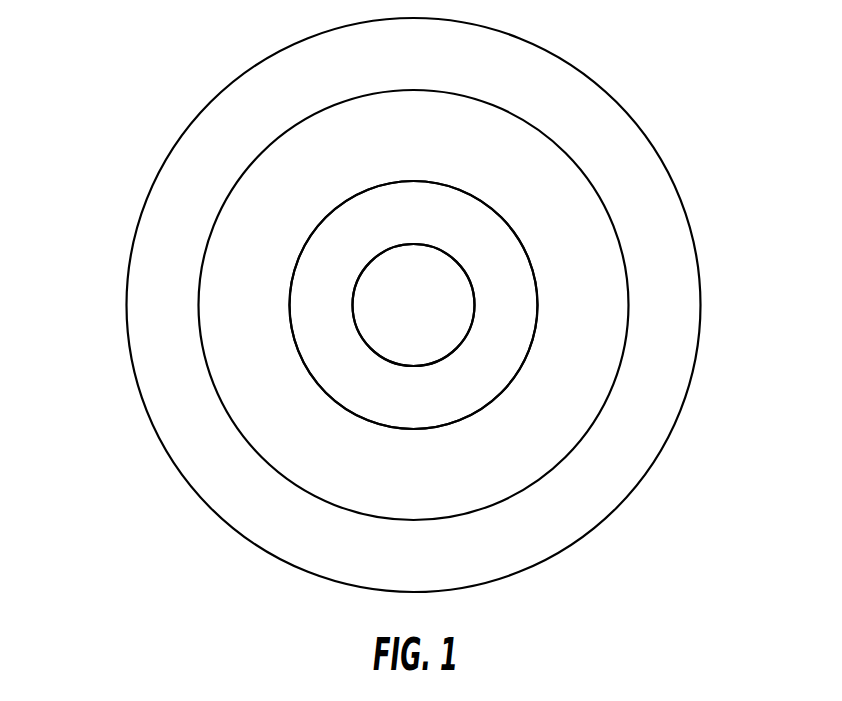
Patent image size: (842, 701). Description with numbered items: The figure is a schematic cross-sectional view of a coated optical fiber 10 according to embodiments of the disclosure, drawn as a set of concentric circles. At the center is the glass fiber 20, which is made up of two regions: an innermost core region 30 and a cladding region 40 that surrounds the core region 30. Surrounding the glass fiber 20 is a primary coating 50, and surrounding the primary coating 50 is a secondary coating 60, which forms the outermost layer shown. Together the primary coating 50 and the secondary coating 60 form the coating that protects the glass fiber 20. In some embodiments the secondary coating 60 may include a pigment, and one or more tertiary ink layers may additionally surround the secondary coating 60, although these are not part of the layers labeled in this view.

The optical fiber 10 is at (406, 305).
The glass fiber 20 is at (488, 205).
The core region 30 is at (448, 286).
The cladding region 40 is at (512, 338).
The primary coating 50 is at (233, 292).
The secondary coating 60 is at (232, 490).